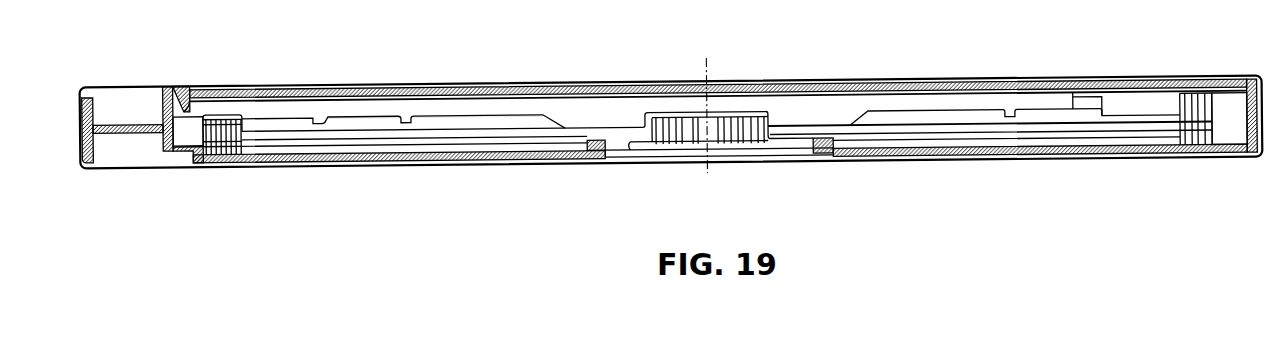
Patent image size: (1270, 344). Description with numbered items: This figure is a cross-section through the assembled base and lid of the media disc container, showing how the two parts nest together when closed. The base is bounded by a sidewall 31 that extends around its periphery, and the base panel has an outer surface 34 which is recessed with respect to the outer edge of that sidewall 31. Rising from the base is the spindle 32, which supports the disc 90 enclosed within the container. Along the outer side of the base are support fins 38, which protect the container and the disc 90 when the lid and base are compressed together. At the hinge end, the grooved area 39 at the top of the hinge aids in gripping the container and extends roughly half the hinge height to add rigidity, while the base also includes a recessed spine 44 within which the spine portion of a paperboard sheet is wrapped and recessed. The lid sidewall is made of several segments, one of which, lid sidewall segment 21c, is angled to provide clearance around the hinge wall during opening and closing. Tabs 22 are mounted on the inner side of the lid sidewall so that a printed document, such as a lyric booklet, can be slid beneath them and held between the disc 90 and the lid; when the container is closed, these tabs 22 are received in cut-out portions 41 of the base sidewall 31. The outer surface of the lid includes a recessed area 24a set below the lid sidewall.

The lid sidewall segment 21c is at (185, 87).
The tab 22 is at (396, 124).
The recessed area 24a is at (772, 88).
The sidewall 31 is at (508, 125).
The spindle 32 is at (770, 127).
The outer surface 34 is at (913, 168).
The support fins 38 is at (1177, 103).
The grooved area 39 is at (110, 96).
The cut-out portions 41 is at (318, 126).
The recessed spine 44 is at (80, 132).
The disc 90 is at (632, 153).